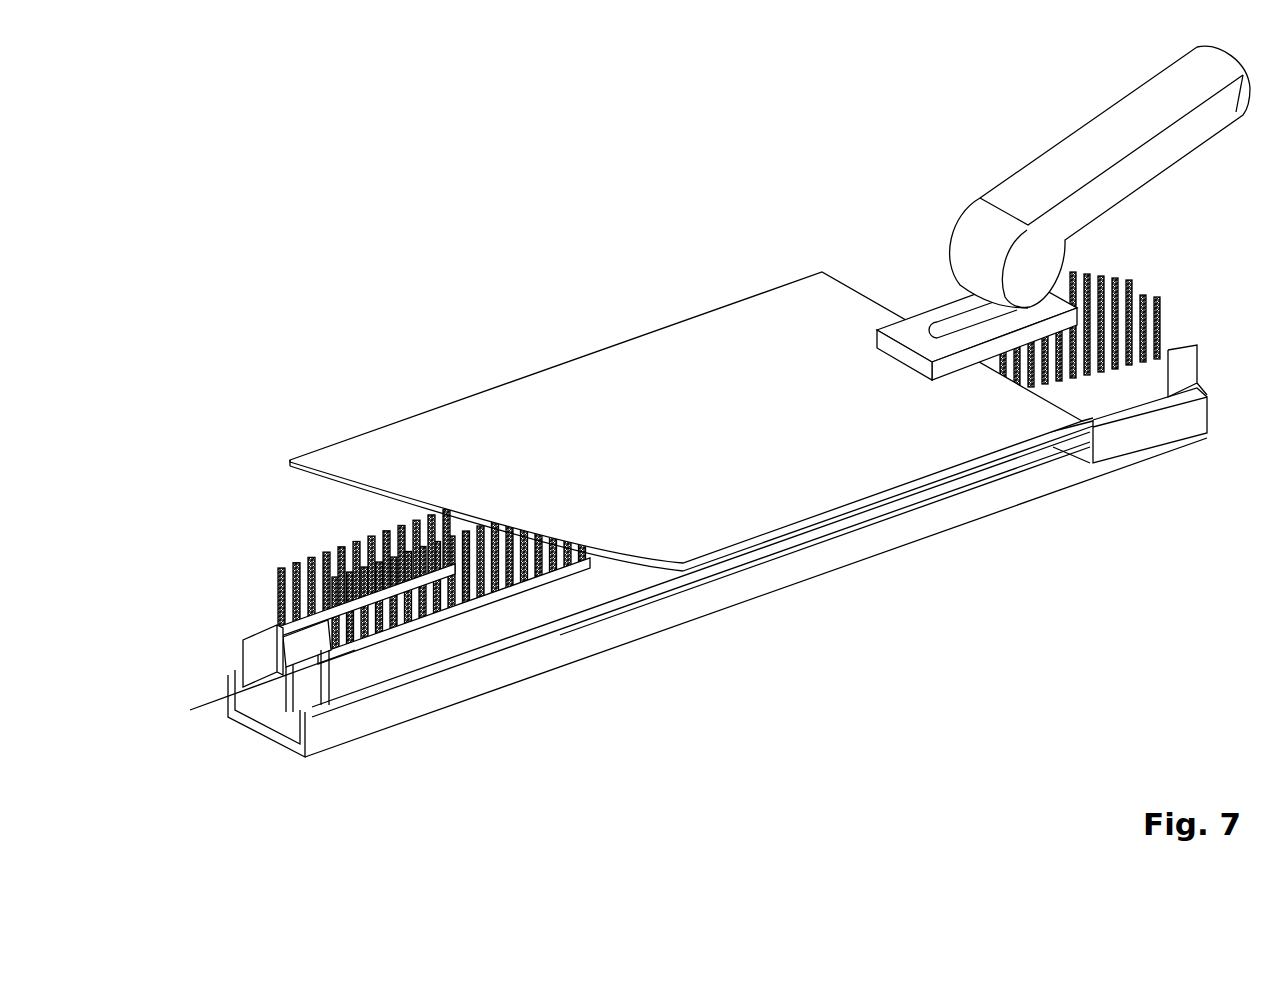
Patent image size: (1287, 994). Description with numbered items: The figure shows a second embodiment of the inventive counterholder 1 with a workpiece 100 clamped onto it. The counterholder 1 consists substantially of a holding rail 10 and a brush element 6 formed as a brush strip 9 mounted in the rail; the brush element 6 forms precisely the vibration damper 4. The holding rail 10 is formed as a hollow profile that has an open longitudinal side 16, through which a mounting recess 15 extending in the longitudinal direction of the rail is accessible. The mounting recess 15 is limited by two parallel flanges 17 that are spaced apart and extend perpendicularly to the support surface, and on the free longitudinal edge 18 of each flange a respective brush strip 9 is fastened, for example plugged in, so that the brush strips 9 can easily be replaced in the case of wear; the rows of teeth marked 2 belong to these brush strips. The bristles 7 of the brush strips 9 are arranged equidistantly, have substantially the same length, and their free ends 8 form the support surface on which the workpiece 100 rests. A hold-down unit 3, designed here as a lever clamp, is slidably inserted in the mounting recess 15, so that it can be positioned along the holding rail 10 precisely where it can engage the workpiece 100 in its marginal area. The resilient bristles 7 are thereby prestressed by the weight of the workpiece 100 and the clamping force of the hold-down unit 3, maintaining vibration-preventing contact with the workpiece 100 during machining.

The counterholder 1 is at (594, 728).
The front row of fins 2 is at (287, 563).
The hold-down unit 3 is at (1097, 145).
The vibration damper 4 is at (380, 660).
The brush element 6 is at (270, 588).
The bristles 7 is at (468, 608).
The free ends 8 is at (347, 553).
The brush strip 9 is at (275, 622).
The holding rail 10 is at (273, 725).
The mounting recess 15 is at (255, 687).
The open longitudinal side 16 is at (1173, 302).
The flanges 17 is at (240, 653).
The free longitudinal edge 18 is at (243, 637).
The workpiece 100 is at (622, 393).